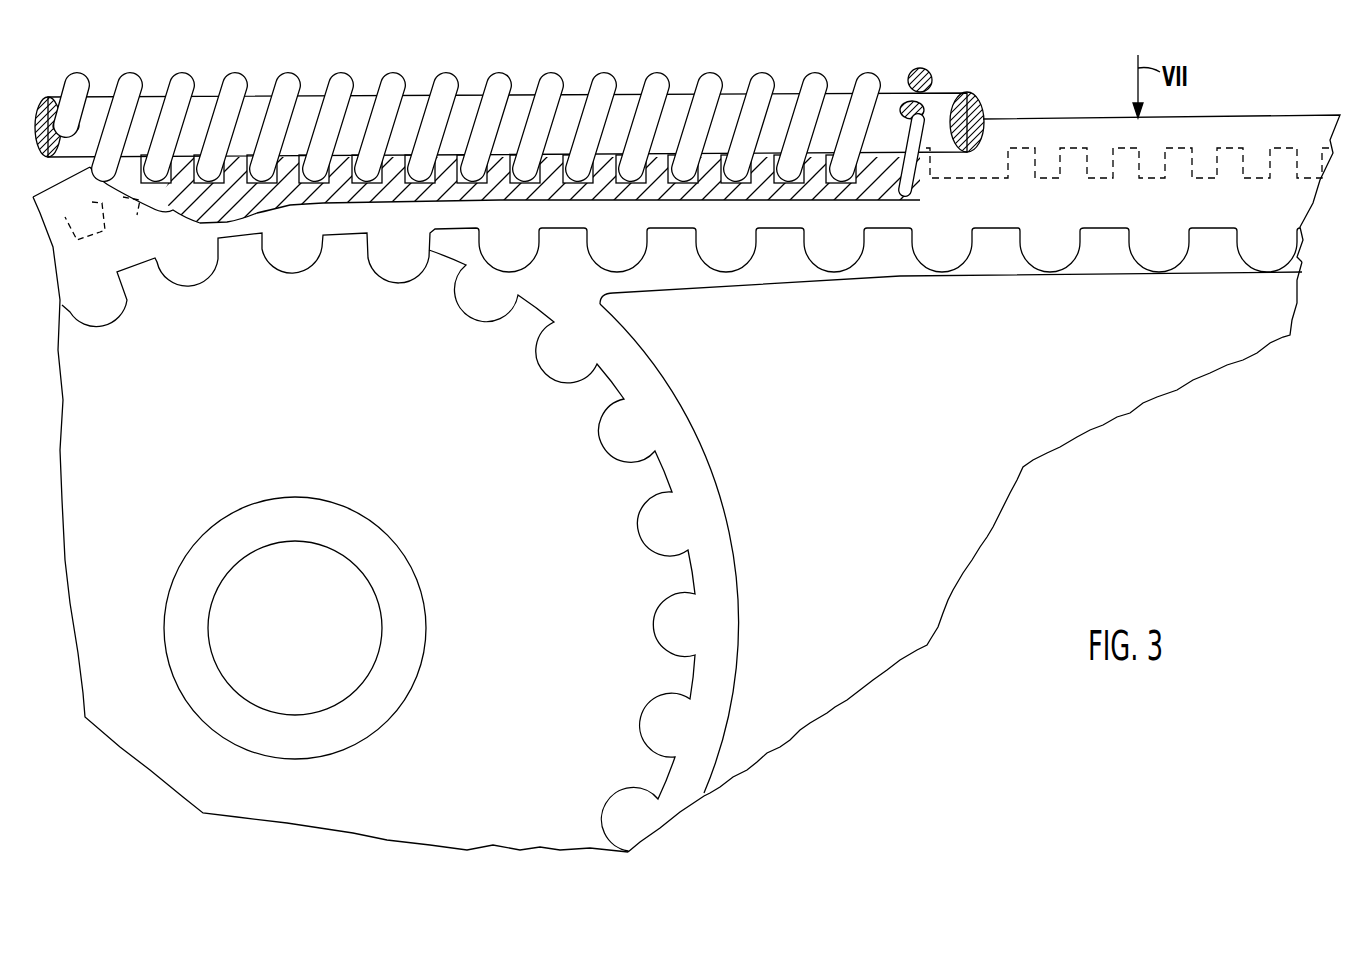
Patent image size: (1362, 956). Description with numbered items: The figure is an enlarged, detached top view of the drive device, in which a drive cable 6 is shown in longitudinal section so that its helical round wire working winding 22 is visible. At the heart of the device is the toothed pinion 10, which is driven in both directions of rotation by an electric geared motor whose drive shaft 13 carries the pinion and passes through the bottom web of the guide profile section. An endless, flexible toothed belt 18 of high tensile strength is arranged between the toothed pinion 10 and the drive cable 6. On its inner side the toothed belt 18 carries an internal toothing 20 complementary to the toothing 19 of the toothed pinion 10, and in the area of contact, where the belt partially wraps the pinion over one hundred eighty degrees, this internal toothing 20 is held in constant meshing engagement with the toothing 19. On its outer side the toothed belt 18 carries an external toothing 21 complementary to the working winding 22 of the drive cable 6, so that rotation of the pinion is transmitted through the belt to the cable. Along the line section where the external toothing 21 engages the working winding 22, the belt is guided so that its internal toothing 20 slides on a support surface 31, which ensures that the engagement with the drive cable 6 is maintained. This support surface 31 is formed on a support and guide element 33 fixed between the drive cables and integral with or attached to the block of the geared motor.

The drive cable 6 is at (940, 90).
The toothed pinion 10 is at (537, 554).
The drive shaft 13 is at (304, 642).
The toothed belt 18 is at (1197, 113).
The toothing of the toothed pinion 19 is at (684, 578).
The internal toothing 20 is at (929, 300).
The external toothing 21 is at (1117, 148).
The working winding 22 is at (868, 84).
The support surface 31 is at (1113, 272).
The support and guide element 33 is at (1015, 414).